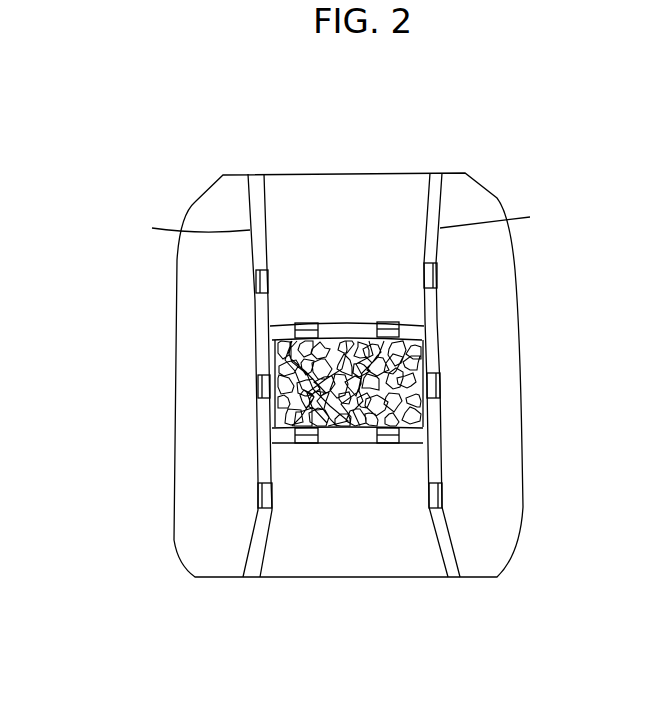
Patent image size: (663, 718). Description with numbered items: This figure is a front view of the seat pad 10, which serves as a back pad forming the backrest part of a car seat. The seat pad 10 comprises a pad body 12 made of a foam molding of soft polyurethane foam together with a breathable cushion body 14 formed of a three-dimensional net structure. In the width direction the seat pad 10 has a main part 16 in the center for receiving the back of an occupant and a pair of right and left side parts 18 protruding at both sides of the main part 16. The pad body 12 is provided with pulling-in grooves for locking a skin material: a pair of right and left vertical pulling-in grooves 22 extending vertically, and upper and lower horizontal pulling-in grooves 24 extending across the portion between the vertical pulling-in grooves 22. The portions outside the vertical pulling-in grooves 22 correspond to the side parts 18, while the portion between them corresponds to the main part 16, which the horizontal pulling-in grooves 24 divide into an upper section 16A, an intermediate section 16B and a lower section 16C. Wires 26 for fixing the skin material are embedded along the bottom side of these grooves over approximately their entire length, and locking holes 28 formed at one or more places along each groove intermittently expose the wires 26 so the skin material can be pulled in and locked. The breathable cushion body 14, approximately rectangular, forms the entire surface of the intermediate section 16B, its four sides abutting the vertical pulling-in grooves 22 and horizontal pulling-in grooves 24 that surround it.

The seat pad 10 is at (362, 77).
The pad body 12 is at (497, 175).
The breathable cushion body 14 is at (425, 345).
The main part 16 is at (372, 172).
The upper section 16A is at (302, 197).
The intermediate section 16B is at (273, 420).
The lower section 16C is at (338, 555).
The side parts 18 is at (200, 353).
The vertical pulling-in grooves 22 is at (343, 219).
The horizontal pulling-in grooves 24 is at (360, 320).
The wires 26 is at (255, 280).
The locking holes 28 is at (318, 322).